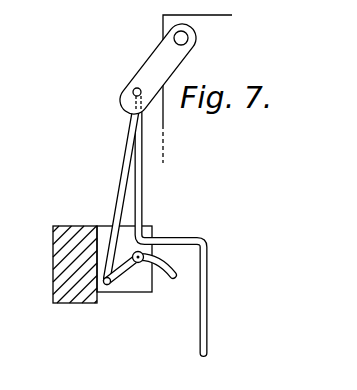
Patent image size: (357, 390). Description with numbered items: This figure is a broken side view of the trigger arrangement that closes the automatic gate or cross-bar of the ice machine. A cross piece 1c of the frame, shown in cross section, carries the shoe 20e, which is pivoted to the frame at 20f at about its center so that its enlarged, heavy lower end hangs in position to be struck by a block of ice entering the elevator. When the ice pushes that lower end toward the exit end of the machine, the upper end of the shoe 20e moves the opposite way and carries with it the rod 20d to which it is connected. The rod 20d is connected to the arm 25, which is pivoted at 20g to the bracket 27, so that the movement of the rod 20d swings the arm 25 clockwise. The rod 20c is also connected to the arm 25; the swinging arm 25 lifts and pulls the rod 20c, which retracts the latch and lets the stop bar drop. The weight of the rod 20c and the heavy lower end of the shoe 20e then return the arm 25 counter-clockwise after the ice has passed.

The cross piece 1c is at (63, 270).
The bracket 27 is at (163, 27).
The rod 20c is at (200, 307).
The rod 20d is at (122, 180).
The shoe 20e is at (113, 284).
The pivot 20f is at (142, 254).
The pivot 20g is at (188, 41).
The arm 25 is at (123, 96).